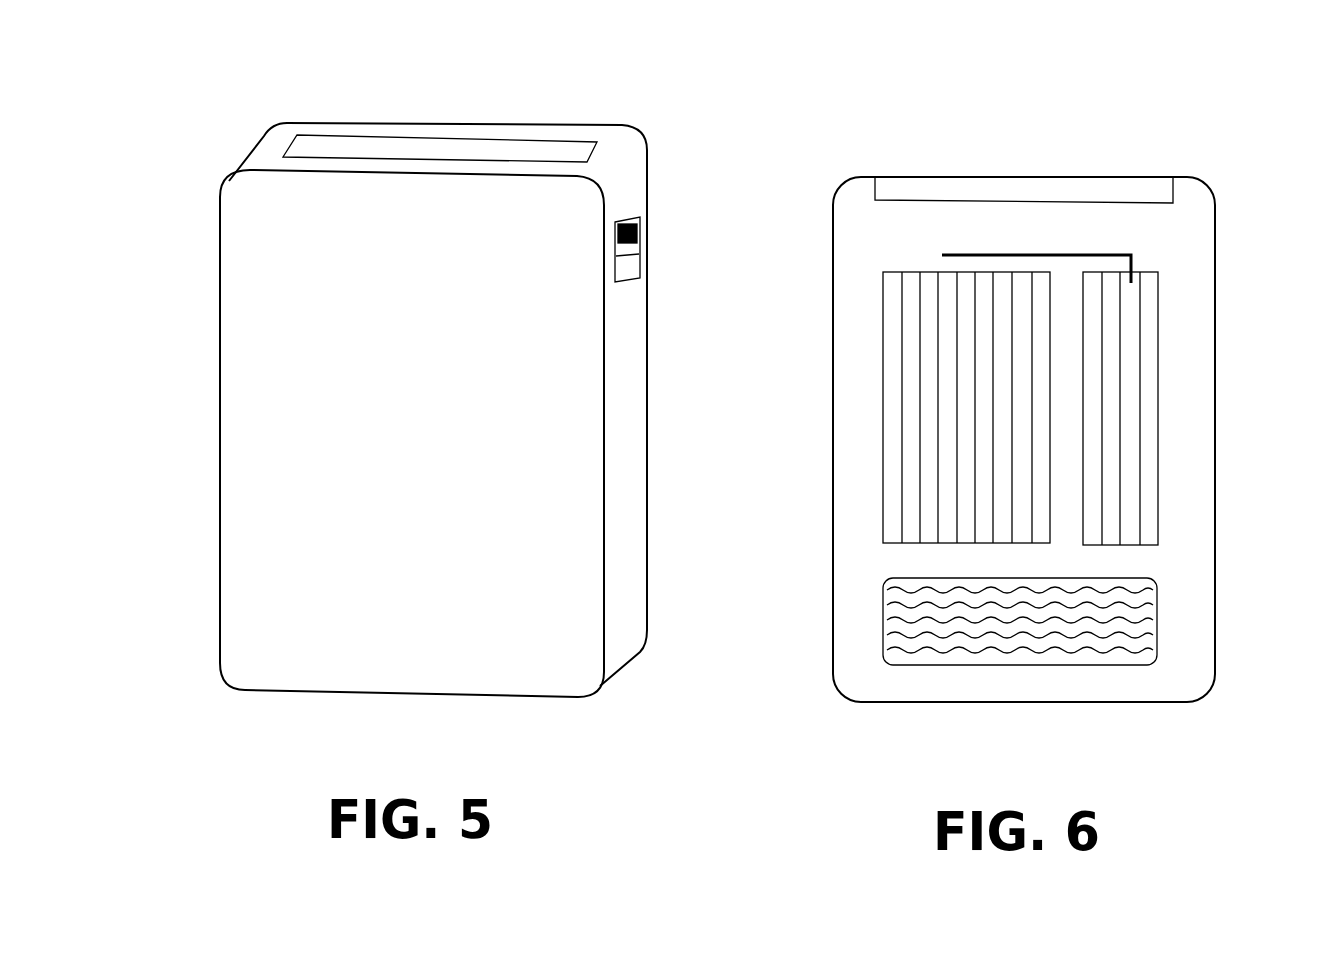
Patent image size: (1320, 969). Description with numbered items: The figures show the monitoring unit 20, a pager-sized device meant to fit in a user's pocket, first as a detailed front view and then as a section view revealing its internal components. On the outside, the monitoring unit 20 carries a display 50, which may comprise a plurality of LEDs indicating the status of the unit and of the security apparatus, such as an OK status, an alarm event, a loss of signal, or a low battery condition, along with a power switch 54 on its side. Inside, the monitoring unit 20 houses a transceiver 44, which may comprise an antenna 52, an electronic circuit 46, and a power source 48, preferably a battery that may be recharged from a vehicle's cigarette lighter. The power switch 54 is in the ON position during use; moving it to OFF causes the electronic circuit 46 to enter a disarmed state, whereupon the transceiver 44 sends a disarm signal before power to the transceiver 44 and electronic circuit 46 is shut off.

In FIG. 5, the monitoring unit 20 is at (266, 331).
In FIG. 6, the transceiver 44 is at (1161, 433).
In FIG. 6, the electronic circuit 46 is at (832, 510).
In FIG. 6, the power source 48 is at (1162, 608).
In FIG. 5, the display 50 is at (421, 131).
In FIG. 6, the display 50 is at (1022, 173).
In FIG. 6, the antenna 52 is at (1154, 248).
In FIG. 5, the power switch 54 is at (649, 274).